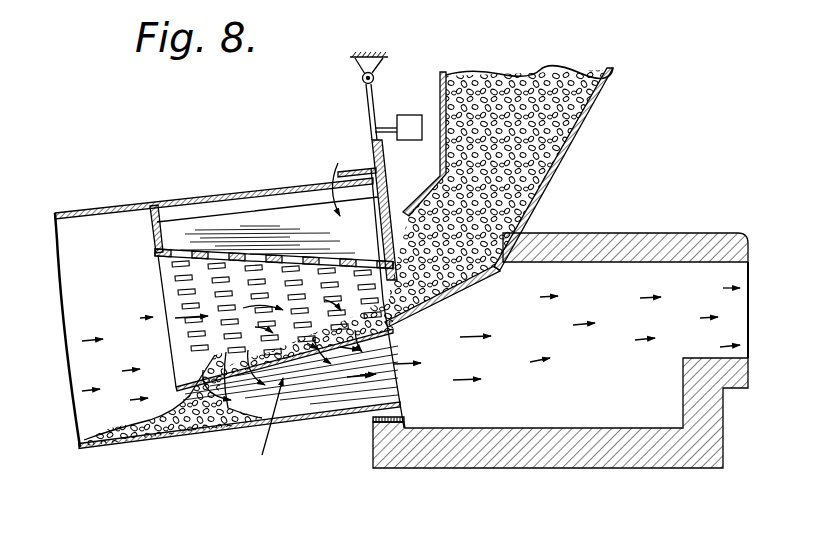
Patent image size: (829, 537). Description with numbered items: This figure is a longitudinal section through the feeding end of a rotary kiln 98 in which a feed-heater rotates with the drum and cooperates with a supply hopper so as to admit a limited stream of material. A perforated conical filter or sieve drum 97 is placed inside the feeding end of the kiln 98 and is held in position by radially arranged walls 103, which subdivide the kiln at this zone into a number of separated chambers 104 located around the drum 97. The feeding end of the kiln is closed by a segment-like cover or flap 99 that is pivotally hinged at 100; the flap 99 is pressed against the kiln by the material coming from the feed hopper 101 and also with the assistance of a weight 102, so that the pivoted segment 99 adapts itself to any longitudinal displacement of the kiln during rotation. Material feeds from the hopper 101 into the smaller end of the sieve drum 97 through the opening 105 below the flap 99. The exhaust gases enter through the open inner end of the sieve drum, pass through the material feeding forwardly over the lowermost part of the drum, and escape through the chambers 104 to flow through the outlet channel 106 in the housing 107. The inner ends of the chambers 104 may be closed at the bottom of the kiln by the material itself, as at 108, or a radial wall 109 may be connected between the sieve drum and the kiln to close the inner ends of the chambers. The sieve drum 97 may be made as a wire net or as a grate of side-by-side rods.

The perforated filter drum 97 is at (271, 257).
The rotary kiln 98 is at (208, 200).
The segment-like cover or flap 99 is at (383, 186).
The pivot hinge 100 is at (381, 74).
The feed hopper 101 is at (565, 132).
The weight 102 is at (410, 122).
The radially arranged walls 103 is at (252, 228).
The separated chambers 104 is at (411, 311).
The opening 105 is at (425, 305).
The outlet channel 106 is at (560, 365).
The housing 107 is at (608, 242).
The material closing the chamber ends 108 is at (172, 438).
The radial wall 109 is at (156, 233).